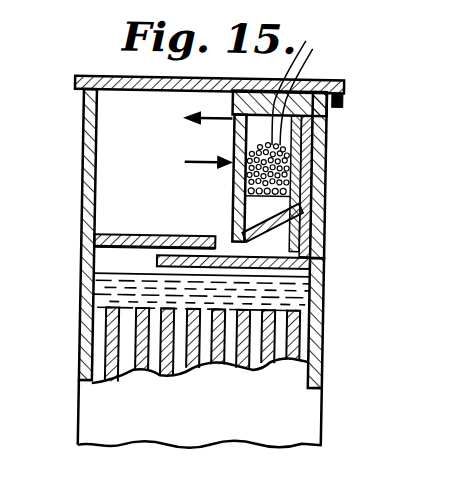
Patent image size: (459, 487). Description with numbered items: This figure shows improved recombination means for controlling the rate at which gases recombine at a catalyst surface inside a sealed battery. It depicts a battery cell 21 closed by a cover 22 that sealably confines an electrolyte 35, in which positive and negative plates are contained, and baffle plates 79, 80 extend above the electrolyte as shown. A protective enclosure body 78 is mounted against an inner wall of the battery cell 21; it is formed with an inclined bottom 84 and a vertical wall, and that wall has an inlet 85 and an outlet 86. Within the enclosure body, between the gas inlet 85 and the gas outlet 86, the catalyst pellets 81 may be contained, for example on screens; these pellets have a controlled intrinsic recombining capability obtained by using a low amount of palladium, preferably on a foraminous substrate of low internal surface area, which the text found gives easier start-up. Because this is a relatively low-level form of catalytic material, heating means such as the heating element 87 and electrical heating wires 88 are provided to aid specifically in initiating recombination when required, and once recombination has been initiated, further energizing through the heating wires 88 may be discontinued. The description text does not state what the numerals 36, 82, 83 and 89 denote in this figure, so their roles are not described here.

The battery cell 21 is at (321, 328).
The cover 22 is at (339, 90).
The electrolyte 35 is at (280, 292).
The chamber space 36 is at (141, 208).
The protective enclosure body 78 is at (193, 160).
The baffle plate 79 is at (281, 255).
The baffle plate 80 is at (115, 245).
The pellets 81 is at (326, 175).
The granular material 82 is at (230, 188).
The opening 83 is at (261, 91).
The inclined bottom 84 is at (274, 221).
The inlet 85 is at (230, 218).
The outlet 86 is at (230, 122).
The heating element 87 is at (325, 150).
The electrical heating wires 88 is at (306, 89).
The insulating block 89 is at (308, 121).